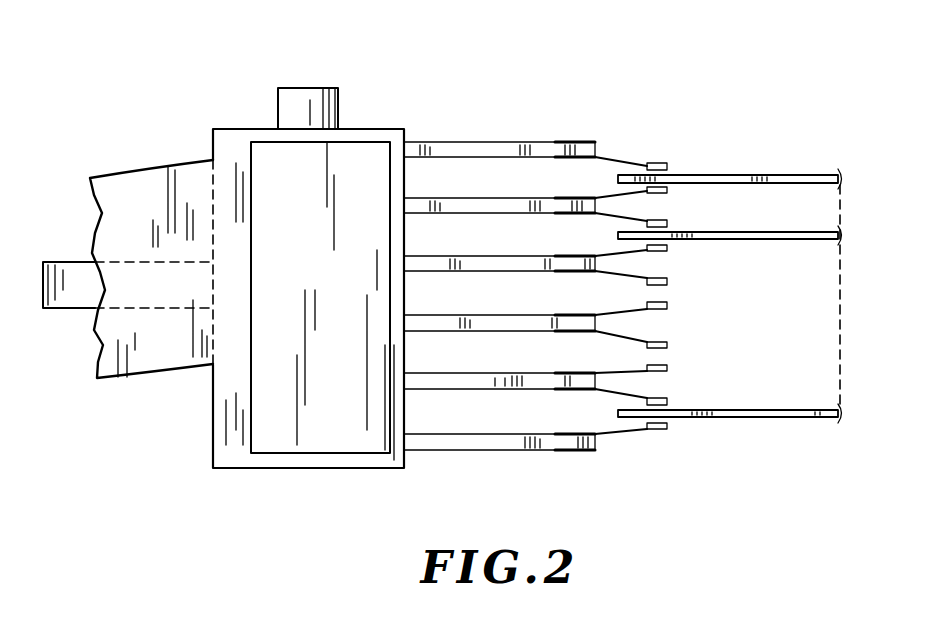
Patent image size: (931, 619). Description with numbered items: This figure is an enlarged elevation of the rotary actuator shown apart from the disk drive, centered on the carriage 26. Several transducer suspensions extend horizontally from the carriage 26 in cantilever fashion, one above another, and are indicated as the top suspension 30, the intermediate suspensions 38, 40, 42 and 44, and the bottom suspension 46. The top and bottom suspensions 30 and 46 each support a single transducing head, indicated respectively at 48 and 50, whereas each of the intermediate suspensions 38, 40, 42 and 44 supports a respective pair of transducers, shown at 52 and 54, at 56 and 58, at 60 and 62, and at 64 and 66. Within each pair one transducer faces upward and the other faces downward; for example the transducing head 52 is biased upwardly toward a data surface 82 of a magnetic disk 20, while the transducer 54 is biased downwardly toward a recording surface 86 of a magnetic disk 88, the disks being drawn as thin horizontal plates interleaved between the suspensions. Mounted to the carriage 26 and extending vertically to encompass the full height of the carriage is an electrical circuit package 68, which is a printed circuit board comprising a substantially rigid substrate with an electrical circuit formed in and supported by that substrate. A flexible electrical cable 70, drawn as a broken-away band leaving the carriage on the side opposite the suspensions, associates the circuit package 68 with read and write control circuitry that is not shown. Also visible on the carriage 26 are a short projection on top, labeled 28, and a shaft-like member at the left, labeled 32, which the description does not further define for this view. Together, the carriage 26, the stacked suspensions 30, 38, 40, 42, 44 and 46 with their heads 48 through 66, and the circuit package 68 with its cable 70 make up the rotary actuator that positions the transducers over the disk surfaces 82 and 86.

The magnetic disk 20 is at (785, 176).
The carriage 26 is at (237, 130).
The key projection 28 is at (310, 100).
The transducer suspension 30 is at (505, 142).
The shaft 32 is at (72, 300).
The transducer suspension 38 is at (505, 210).
The transducer suspension 40 is at (505, 268).
The transducer suspension 42 is at (505, 326).
The transducer suspension 44 is at (505, 384).
The transducer suspension 46 is at (505, 444).
The transducing head 48 is at (667, 166).
The transducing head 50 is at (667, 426).
The transducing head 52 is at (667, 190).
The transducer 54 is at (667, 223).
The transducer 56 is at (667, 248).
The transducer 58 is at (667, 282).
The transducer 60 is at (667, 305).
The transducer 62 is at (667, 345).
The transducer 64 is at (667, 368).
The transducer 66 is at (667, 401).
The electrical circuit package 68 is at (285, 440).
The flexible electrical cable 70 is at (145, 190).
The data surface 82 is at (828, 185).
The recording surface 86 is at (798, 232).
The magnetic disk 88 is at (828, 242).